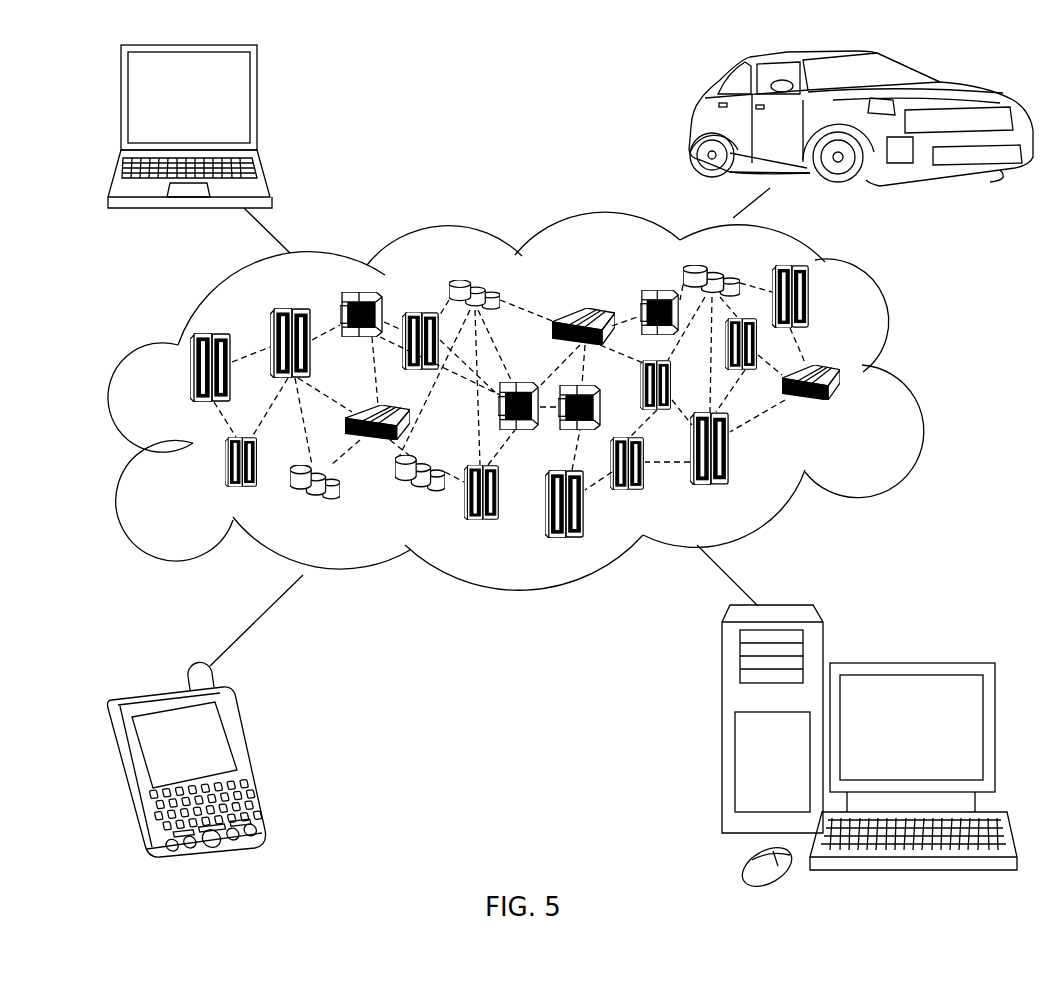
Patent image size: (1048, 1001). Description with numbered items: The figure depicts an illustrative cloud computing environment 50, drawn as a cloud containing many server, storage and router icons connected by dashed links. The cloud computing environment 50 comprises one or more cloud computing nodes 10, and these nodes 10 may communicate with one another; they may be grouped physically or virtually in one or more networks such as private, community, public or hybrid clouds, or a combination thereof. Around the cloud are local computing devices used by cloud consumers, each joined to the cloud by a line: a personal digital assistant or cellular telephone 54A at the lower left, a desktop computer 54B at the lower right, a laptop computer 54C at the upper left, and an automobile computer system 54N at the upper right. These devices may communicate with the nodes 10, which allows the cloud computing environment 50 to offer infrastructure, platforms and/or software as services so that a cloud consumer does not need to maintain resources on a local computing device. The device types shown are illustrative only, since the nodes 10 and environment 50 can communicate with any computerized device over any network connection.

The cloud computing node 10 is at (858, 409).
The cloud computing environment 50 is at (539, 401).
The personal digital assistant or cellular telephone 54A is at (248, 757).
The desktop computer 54B is at (908, 662).
The laptop computer 54C is at (258, 108).
The automobile computer system 54N is at (690, 125).